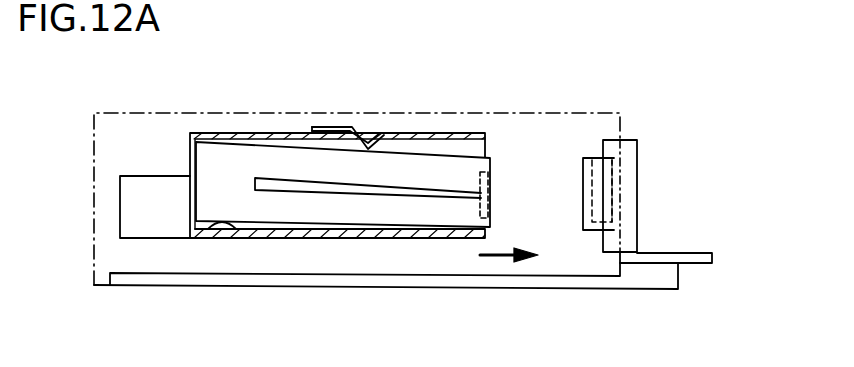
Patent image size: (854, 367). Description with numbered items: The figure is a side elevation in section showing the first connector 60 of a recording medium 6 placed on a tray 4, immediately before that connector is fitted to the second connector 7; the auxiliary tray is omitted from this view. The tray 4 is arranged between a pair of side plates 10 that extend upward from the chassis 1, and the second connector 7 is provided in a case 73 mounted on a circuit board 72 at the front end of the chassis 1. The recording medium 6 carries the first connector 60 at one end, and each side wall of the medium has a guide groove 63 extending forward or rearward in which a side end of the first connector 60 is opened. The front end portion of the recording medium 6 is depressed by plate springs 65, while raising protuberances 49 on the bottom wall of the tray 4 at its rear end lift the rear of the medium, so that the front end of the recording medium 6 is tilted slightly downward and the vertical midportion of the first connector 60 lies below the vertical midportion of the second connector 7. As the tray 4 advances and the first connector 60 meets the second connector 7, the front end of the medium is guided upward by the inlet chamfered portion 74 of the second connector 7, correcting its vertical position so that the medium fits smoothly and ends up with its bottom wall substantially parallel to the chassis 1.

The chassis 1 is at (524, 286).
The tray 4 is at (433, 137).
The recording medium 6 is at (223, 163).
The second connector 7 is at (612, 182).
The side plate 10 is at (160, 128).
The raising protuberance 49 is at (222, 227).
The first connector 60 is at (490, 207).
The guide groove 63 is at (398, 192).
The plate spring 65 is at (332, 127).
The circuit board 72 is at (687, 252).
The case 73 is at (637, 207).
The chamfered portion 74 is at (593, 157).